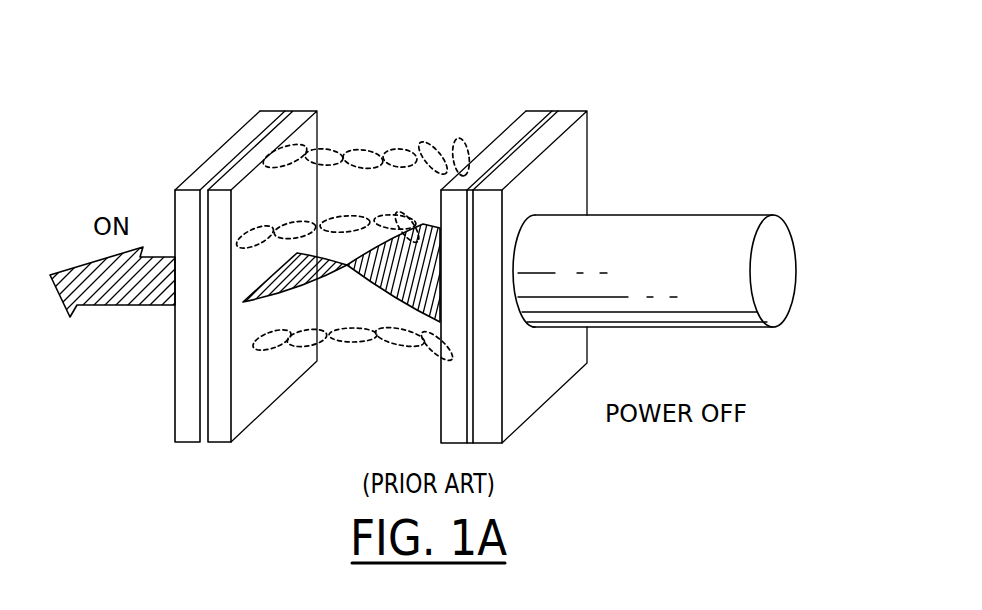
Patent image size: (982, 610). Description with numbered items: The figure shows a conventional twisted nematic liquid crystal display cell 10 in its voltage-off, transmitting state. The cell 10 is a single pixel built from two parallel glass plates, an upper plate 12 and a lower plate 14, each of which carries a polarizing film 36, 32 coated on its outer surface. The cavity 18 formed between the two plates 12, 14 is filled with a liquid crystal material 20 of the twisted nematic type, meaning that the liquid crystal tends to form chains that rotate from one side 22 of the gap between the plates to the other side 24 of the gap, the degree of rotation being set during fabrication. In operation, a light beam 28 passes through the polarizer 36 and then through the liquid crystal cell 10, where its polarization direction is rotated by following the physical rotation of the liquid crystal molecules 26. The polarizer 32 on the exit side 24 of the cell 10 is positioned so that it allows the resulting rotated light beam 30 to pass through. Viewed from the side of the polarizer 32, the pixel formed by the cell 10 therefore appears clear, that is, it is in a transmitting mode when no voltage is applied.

The liquid crystal display cell 10 is at (443, 30).
The upper plate 12 is at (540, 112).
The lower plate 14 is at (295, 115).
The cavity 18 is at (472, 73).
The liquid crystal material 20 is at (365, 140).
The one side of the gap 22 is at (505, 100).
The other side of the gap 24 is at (340, 123).
The liquid crystal molecules 26 is at (403, 153).
The light beam 28 is at (702, 210).
The rotated light beam 30 is at (290, 288).
The polarizing film (polarizer) 32 is at (183, 436).
The polarizing film (polarizer) 36 is at (487, 438).